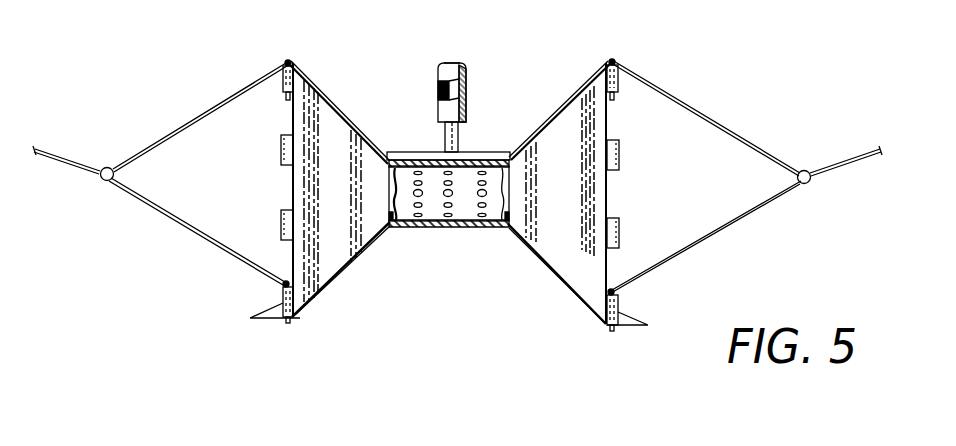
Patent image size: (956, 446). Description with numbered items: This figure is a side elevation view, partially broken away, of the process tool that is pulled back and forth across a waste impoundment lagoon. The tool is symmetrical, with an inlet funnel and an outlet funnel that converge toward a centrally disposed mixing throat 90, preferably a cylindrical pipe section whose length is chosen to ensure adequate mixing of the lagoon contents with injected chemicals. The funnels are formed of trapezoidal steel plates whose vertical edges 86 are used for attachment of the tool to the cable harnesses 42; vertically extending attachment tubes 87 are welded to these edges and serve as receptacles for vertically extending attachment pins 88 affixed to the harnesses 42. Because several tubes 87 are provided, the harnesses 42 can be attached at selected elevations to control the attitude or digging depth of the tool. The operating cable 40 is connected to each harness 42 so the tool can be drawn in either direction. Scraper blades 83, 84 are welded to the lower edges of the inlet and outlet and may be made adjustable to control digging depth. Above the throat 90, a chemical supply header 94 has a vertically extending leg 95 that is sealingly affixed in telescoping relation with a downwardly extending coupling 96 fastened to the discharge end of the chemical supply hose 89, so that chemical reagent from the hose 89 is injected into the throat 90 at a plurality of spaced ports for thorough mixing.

The operating cable 40 is at (60, 157).
The cable harness 42 is at (768, 118).
The scraper blade 83 is at (266, 318).
The scraper blade 84 is at (631, 325).
The vertical edge 86 is at (292, 183).
The attachment tube 87 is at (281, 238).
The attachment pin 88 is at (288, 60).
The chemical supply hose 89 is at (466, 66).
The mixing throat 90 is at (439, 230).
The chemical supply header 94 is at (496, 152).
The vertically extending leg 95 is at (445, 141).
The coupling 96 is at (445, 96).